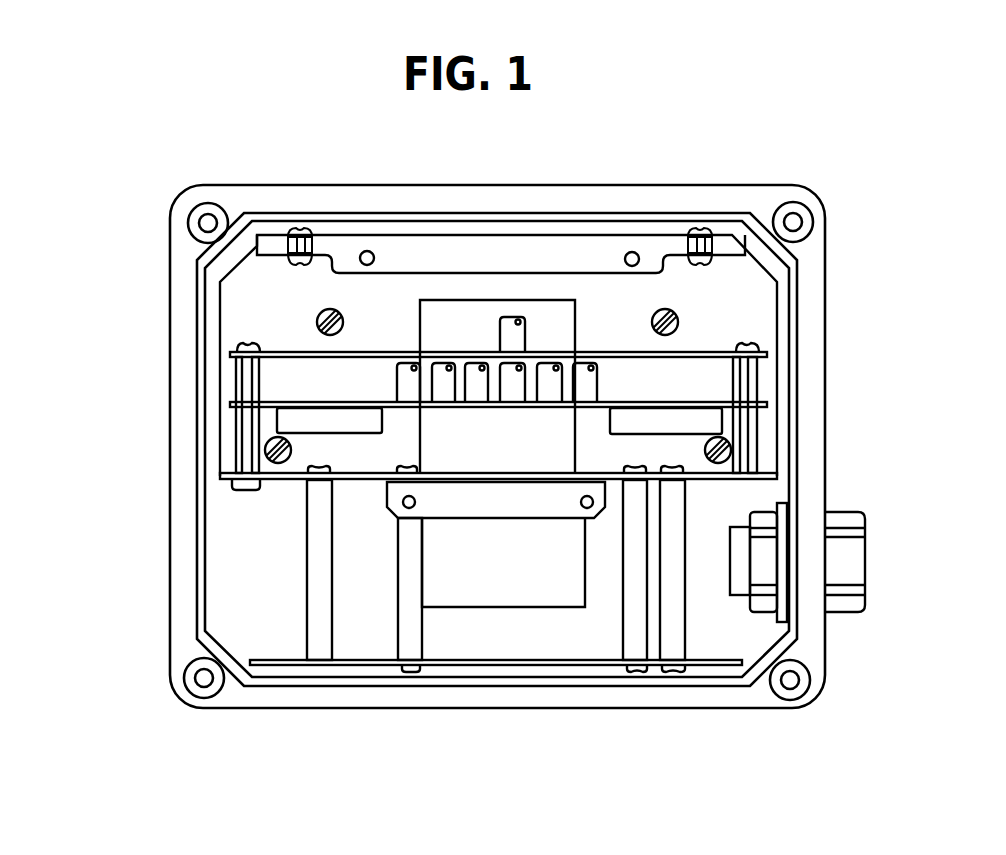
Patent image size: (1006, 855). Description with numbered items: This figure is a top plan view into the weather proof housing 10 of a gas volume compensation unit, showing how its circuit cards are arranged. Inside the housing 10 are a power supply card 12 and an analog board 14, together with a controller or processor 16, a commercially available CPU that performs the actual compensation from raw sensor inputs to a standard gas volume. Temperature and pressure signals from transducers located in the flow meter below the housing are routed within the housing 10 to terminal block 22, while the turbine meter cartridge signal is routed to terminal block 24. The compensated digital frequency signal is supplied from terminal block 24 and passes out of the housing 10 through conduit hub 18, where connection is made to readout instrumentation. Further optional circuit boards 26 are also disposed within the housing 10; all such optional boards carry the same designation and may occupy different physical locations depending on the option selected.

The weather proof housing 10 is at (798, 187).
The power supply card 12 is at (715, 667).
The analog board 14 is at (717, 400).
The controller or processor (CPU) 16 is at (722, 348).
The conduit hub 18 is at (866, 564).
The terminal block 22 is at (275, 421).
The terminal block 24 is at (722, 418).
The optional circuit boards 26 is at (267, 241).